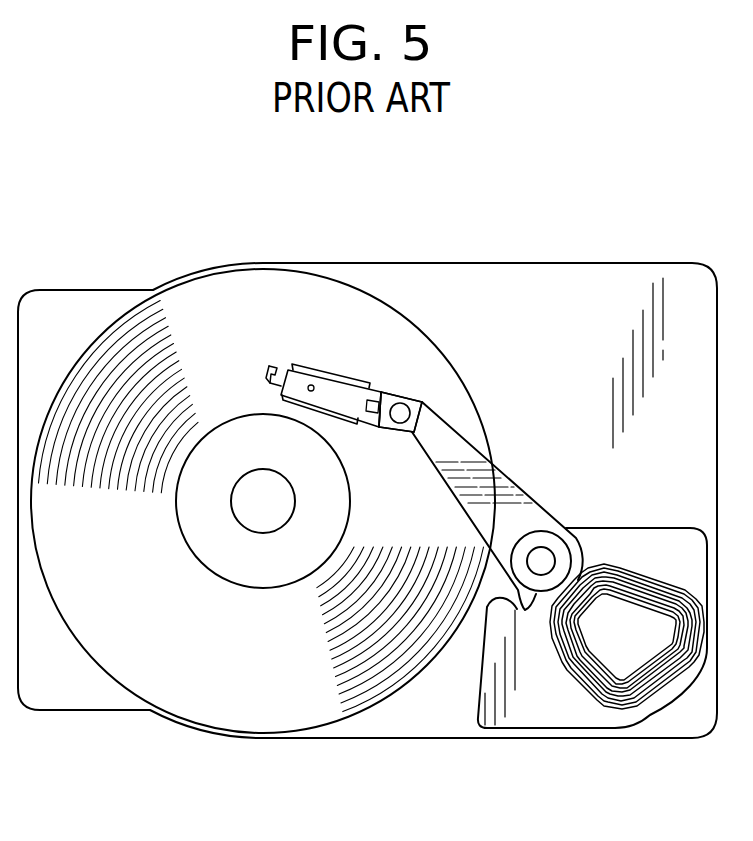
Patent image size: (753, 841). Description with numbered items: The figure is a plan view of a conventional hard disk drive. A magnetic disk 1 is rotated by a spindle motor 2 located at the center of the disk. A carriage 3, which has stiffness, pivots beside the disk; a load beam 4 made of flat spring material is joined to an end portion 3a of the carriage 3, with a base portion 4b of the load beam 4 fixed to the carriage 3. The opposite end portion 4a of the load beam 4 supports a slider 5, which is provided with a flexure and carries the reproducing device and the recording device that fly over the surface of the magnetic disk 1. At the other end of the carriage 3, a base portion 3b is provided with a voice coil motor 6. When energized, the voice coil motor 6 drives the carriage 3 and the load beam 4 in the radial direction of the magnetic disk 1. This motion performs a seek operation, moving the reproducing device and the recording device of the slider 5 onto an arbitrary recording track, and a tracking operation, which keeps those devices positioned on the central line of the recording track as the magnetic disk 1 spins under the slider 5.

The magnetic disk 1 is at (213, 345).
The spindle motor 2 is at (260, 507).
The carriage 3 is at (522, 490).
The end portion of the carriage 3a is at (417, 425).
The base portion of the carriage 3b is at (577, 553).
The load beam 4 is at (350, 380).
The end portion of the load beam 4a is at (286, 364).
The base portion of the load beam 4b is at (405, 400).
The slider 5 is at (268, 366).
The voice coil motor 6 is at (537, 698).